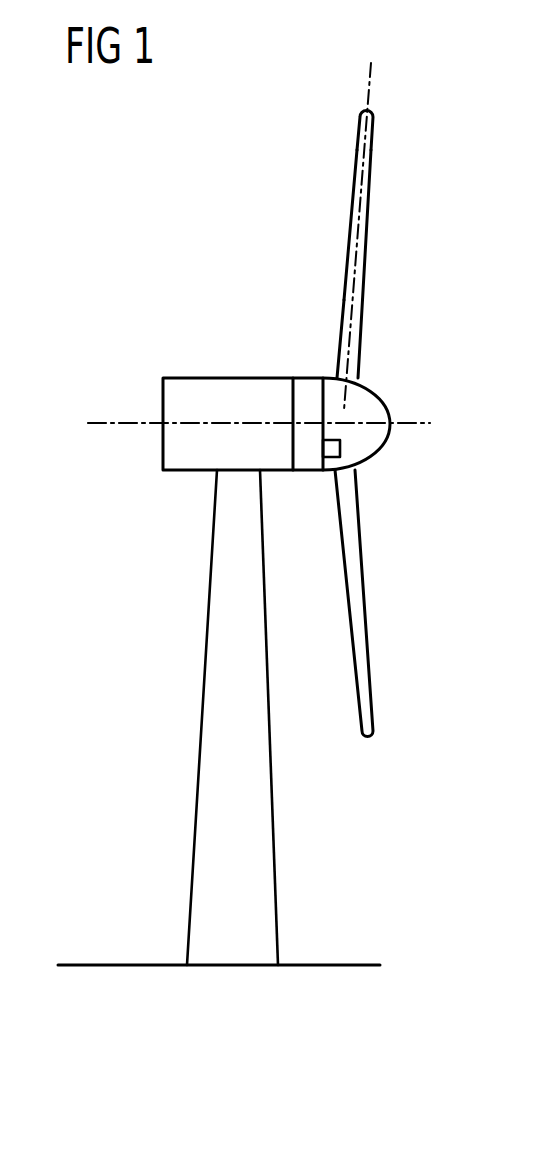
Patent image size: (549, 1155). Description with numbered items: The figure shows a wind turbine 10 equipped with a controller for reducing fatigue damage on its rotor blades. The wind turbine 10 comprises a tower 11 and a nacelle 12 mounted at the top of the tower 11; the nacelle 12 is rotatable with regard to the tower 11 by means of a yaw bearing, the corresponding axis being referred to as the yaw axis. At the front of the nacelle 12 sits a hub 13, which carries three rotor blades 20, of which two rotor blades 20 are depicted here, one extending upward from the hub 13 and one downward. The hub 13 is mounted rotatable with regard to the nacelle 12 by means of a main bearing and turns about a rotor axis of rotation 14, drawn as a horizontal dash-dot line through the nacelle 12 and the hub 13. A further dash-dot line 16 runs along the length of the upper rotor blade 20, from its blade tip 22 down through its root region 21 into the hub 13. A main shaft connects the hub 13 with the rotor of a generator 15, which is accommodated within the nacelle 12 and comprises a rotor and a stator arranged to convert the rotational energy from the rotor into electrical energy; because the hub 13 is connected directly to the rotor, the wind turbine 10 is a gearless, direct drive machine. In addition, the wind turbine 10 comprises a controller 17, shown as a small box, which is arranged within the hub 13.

The wind turbine 10 is at (150, 620).
The tower 11 is at (250, 801).
The nacelle 12 is at (213, 377).
The hub 13 is at (385, 402).
The rotor axis of rotation 14 is at (103, 422).
The generator 15 is at (310, 471).
The blade pitch axis 16 is at (369, 83).
The controller 17 is at (333, 447).
The rotor blades 20 is at (364, 243).
The blade root 21 is at (362, 350).
The blade tip 22 is at (374, 126).